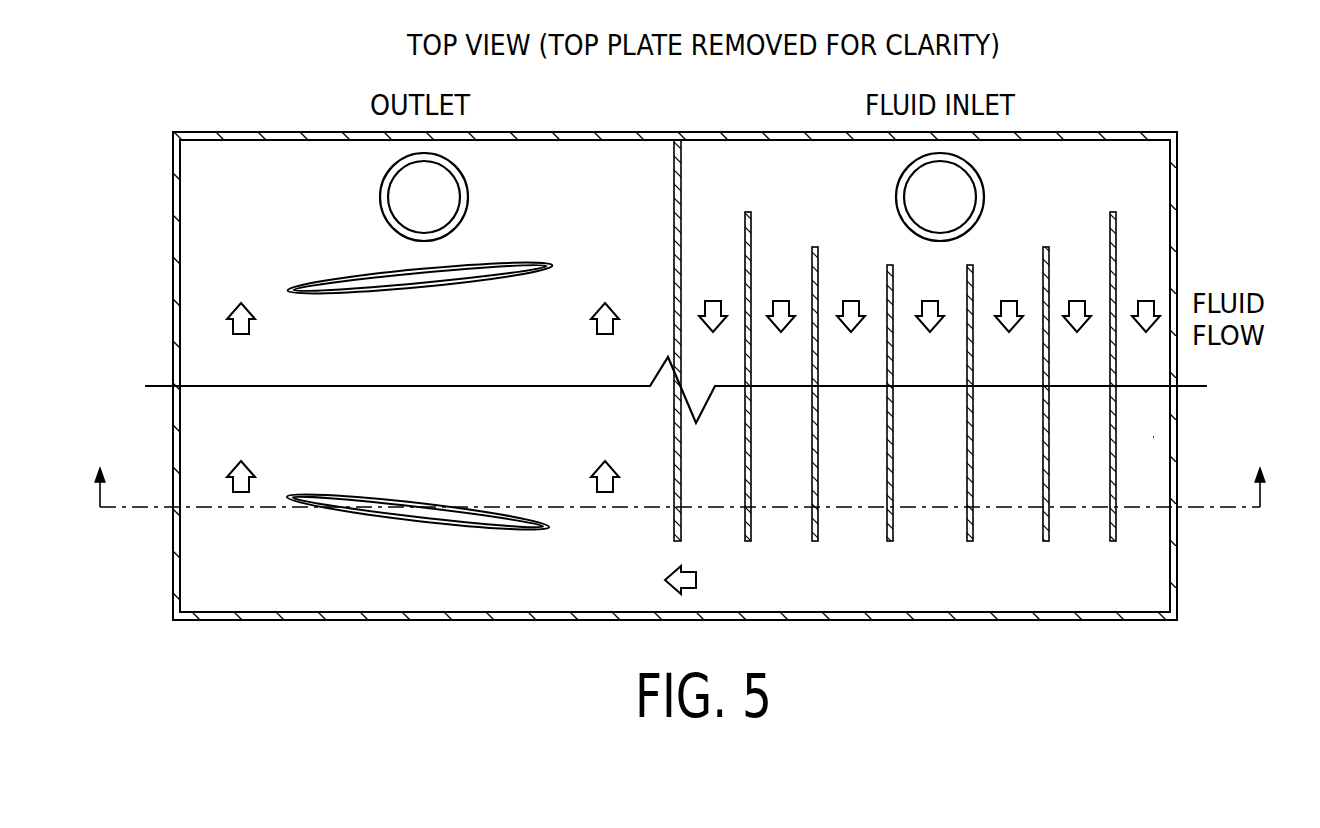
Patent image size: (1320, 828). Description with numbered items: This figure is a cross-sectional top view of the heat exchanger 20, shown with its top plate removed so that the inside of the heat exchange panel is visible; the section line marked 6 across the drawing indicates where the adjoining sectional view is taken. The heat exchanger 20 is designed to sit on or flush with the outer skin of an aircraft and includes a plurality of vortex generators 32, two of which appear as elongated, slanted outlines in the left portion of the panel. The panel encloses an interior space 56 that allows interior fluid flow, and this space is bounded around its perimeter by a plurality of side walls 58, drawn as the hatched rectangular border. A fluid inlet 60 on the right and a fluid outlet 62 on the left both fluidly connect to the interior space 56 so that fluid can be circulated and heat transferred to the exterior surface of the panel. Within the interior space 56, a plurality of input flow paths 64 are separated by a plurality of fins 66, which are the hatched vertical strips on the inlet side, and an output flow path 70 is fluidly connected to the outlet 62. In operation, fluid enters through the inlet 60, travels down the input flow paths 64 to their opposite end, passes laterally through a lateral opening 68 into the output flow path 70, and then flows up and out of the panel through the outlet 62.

The heat exchanger 20 is at (1193, 143).
The vortex generators 32 is at (323, 492).
The interior space 56 is at (918, 550).
The side walls 58 is at (1172, 576).
The fluid inlet 60 is at (984, 190).
The fluid outlet 62 is at (388, 172).
The input flow paths 64 is at (1153, 437).
The fins 66 is at (1113, 525).
The lateral opening 68 is at (688, 571).
The output flow path 70 is at (192, 430).
The section line 6- 6 is at (680, 473).